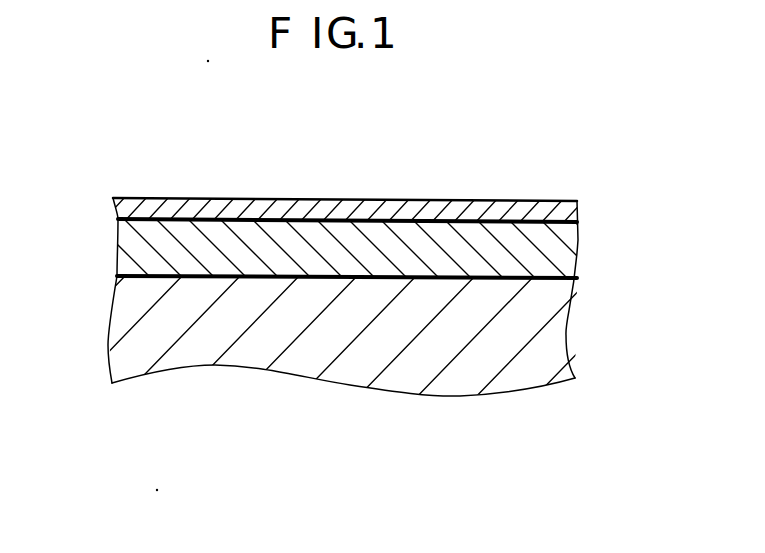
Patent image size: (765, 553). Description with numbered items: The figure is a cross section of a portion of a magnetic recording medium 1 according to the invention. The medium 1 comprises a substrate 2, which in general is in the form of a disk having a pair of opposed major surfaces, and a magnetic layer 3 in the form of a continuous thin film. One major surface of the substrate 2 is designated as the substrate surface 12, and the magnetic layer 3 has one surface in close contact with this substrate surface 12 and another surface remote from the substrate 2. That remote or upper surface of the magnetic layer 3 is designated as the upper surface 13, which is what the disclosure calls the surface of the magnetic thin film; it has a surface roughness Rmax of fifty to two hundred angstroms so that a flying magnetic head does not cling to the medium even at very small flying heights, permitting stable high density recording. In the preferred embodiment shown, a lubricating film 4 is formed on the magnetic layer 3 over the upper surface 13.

The magnetic recording medium 1 is at (328, 259).
The substrate 2 is at (359, 368).
The magnetic layer 3 is at (568, 250).
The lubricating film 4 is at (478, 207).
The substrate surface 12 is at (147, 274).
The upper surface 13 is at (140, 217).